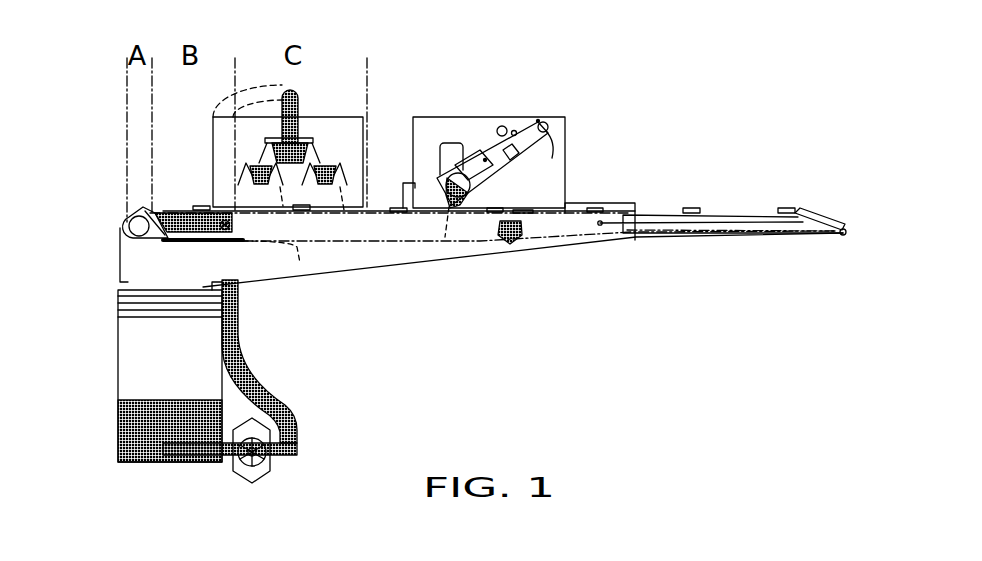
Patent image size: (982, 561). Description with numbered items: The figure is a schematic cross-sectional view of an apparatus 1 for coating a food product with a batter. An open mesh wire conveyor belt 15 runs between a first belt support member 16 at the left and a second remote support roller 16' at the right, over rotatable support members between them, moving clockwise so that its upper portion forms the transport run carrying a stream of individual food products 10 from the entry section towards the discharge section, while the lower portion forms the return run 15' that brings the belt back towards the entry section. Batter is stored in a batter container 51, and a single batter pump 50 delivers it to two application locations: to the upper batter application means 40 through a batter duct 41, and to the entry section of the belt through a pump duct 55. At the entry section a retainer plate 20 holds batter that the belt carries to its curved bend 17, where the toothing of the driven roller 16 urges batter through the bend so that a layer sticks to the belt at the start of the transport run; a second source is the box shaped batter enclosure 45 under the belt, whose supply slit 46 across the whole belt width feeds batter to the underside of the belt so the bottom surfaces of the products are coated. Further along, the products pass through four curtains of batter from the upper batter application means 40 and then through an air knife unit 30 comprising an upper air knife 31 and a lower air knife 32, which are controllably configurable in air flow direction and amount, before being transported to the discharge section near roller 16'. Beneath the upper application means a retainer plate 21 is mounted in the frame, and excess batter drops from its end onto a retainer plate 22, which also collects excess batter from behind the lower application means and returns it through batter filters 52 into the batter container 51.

The apparatus 1 is at (433, 344).
The food products 10 is at (197, 206).
The conveyor belt 15 is at (701, 183).
The return run 15' is at (539, 283).
The first belt support member 16 is at (113, 209).
The second remote support roller 16' is at (843, 256).
The curved bend 17 is at (128, 234).
The retainer plate 20 is at (215, 253).
The retainer plate 21 is at (335, 215).
The retainer plate 22 is at (327, 273).
The air knife unit 30 is at (444, 130).
The upper air knife 31 is at (416, 187).
The lower air knife 32 is at (512, 246).
The upper batter application means 40 is at (334, 130).
The batter duct 41 is at (257, 88).
The batter enclosure 45 is at (232, 237).
The slit 46 is at (158, 215).
The batter pump 50 is at (273, 422).
The batter container 51 is at (145, 415).
The batter filters 52 is at (117, 298).
The pump duct 55 is at (287, 448).